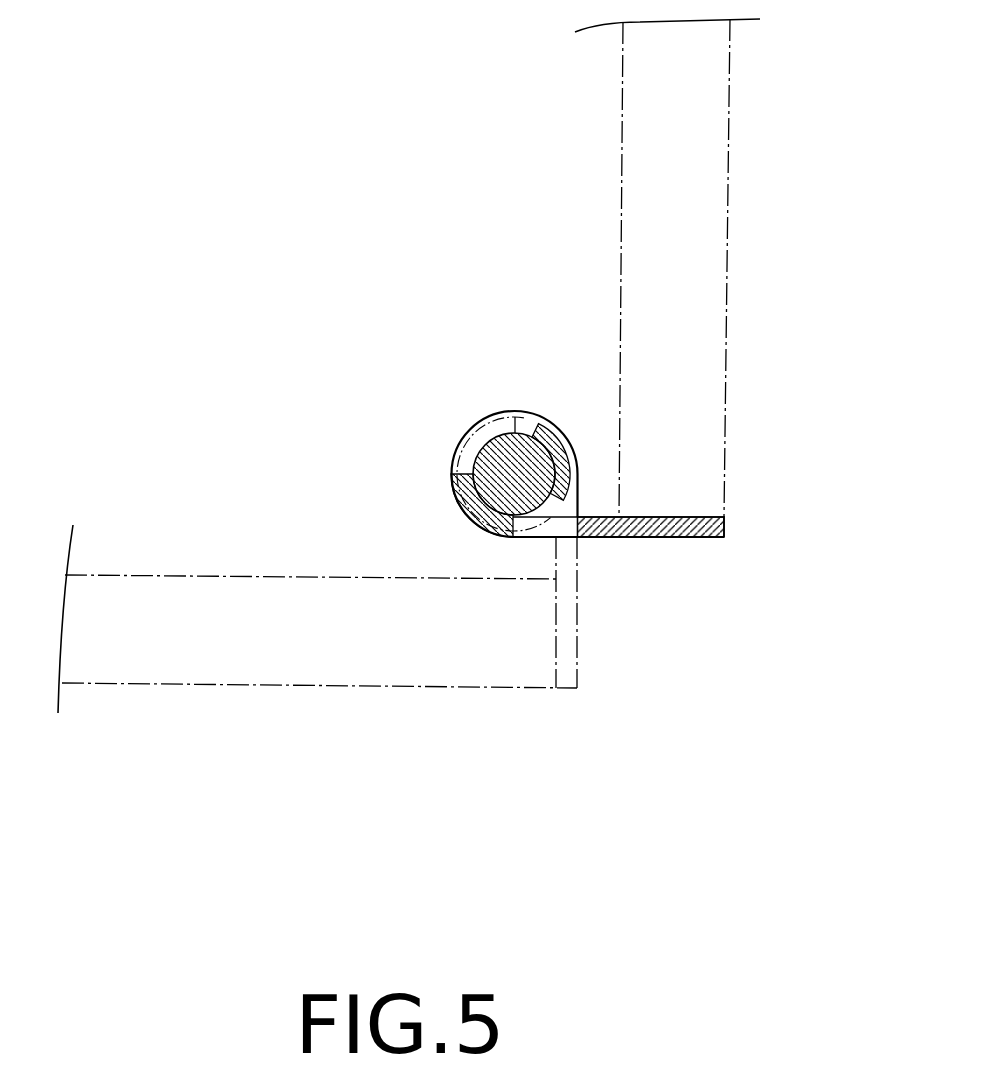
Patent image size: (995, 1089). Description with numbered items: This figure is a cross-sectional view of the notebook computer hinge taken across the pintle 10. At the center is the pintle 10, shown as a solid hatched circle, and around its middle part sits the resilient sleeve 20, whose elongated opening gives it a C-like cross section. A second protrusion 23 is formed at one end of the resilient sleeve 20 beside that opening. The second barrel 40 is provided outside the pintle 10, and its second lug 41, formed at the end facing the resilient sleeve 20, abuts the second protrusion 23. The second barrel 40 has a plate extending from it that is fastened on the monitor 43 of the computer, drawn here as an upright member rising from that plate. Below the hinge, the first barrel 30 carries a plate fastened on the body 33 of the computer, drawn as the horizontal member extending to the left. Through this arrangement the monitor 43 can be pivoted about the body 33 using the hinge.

The pintle 10 is at (477, 448).
The resilient sleeve 20 is at (503, 406).
The second protrusion 23 is at (540, 428).
The first barrel 30 is at (598, 663).
The body 33 is at (370, 685).
The second barrel 40 is at (702, 558).
The second lug 41 is at (468, 502).
The monitor 43 is at (713, 358).